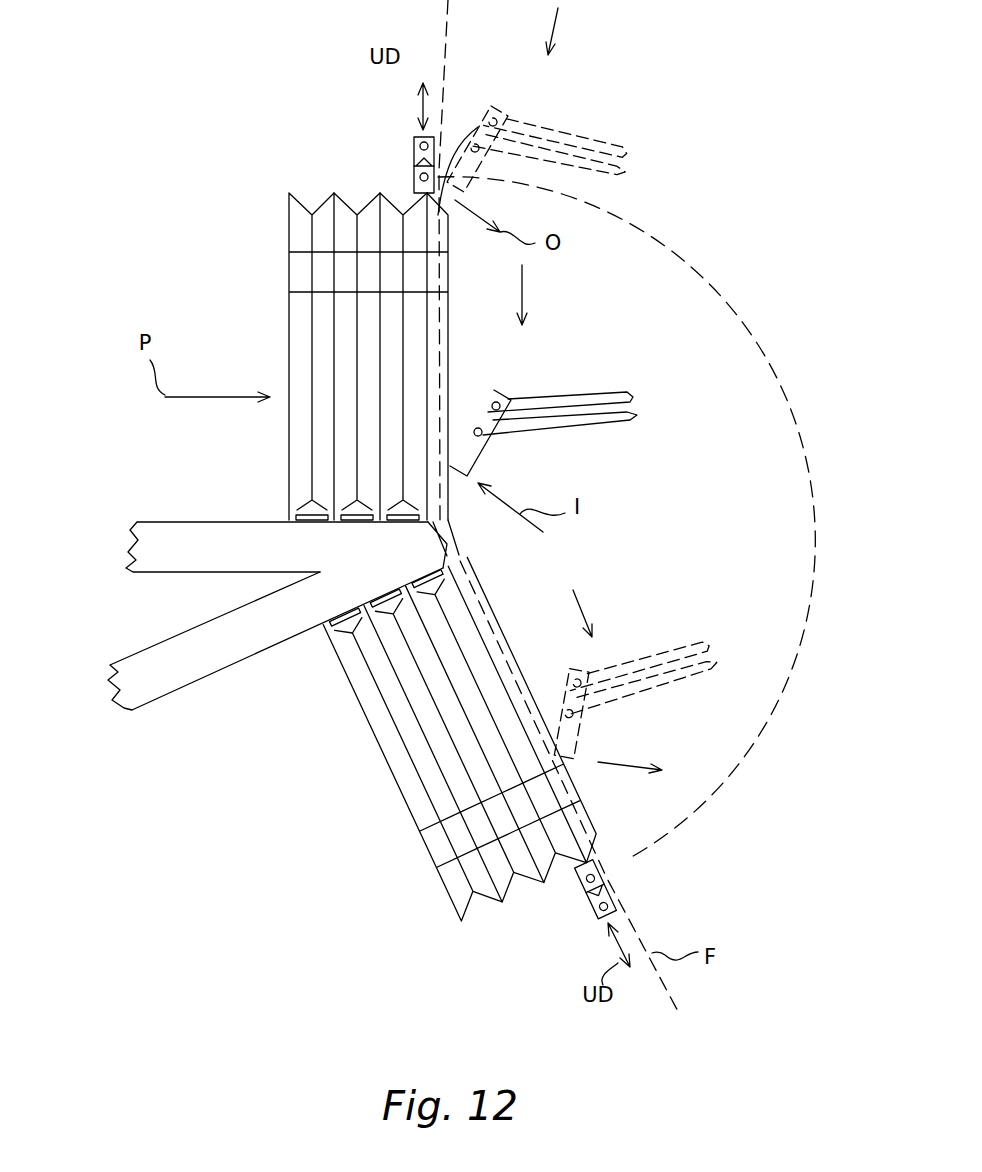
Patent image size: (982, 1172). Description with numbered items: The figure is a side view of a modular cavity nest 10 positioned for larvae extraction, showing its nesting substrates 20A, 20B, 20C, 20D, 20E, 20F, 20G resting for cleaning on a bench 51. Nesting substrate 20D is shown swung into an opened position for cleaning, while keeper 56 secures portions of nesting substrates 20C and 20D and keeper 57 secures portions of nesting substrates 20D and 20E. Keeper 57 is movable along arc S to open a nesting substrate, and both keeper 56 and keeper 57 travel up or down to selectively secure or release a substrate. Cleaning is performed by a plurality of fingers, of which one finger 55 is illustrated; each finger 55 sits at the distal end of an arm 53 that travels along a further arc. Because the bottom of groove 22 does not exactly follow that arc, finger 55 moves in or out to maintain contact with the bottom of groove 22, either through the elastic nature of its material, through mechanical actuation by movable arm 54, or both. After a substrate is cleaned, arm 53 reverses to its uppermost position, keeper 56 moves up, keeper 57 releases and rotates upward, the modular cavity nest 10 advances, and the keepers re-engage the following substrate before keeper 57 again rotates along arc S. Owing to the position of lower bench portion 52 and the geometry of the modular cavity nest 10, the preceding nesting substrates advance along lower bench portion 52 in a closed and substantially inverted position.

The modular cavity nest 10 is at (178, 163).
The nesting substrate 20A is at (320, 205).
The nesting substrate 20B is at (345, 197).
The nesting substrate 20C is at (405, 212).
The nesting substrate 20D is at (450, 332).
The nesting substrate 20E is at (543, 890).
The nesting substrate 20F is at (508, 905).
The nesting substrate 20G is at (455, 912).
The groove 22 is at (485, 582).
The bench 51 is at (128, 576).
The lower bench portion 52 is at (193, 657).
The arm 53 is at (640, 415).
The movable arm 54 is at (612, 395).
The finger 55 is at (485, 446).
The keeper 56 is at (414, 138).
The keeper 57 is at (599, 861).
The arc S is at (790, 366).